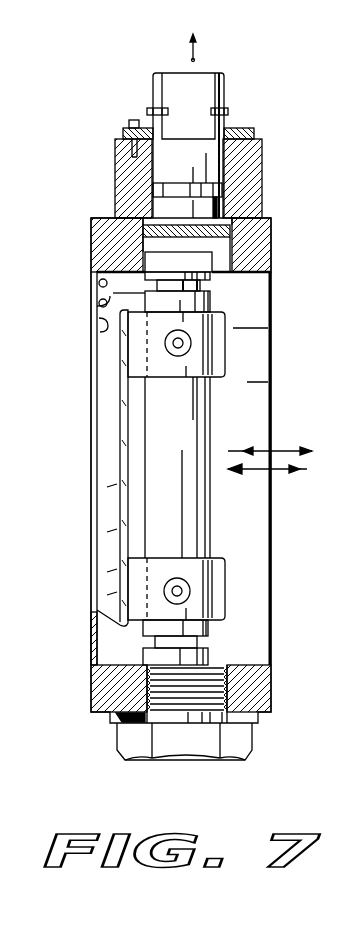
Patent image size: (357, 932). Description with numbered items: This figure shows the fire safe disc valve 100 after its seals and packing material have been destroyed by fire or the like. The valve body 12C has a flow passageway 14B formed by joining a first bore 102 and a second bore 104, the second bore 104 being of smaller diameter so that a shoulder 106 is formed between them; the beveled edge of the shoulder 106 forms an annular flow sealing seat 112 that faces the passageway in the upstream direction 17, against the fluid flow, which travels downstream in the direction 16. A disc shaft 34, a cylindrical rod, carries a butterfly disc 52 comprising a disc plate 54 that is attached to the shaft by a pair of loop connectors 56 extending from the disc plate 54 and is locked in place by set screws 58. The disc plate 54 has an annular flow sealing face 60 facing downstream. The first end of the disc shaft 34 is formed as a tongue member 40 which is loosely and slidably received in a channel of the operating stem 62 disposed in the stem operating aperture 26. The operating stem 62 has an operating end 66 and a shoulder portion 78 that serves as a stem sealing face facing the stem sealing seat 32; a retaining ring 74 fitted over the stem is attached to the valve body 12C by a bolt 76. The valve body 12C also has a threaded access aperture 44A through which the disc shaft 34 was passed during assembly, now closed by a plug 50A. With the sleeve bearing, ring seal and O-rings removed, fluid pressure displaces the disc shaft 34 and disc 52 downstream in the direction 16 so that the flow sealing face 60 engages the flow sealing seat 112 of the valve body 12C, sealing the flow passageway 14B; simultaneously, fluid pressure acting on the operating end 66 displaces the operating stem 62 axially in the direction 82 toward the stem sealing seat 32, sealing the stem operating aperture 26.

The fire safe disc valve 100 is at (182, 364).
The first bore 102 is at (258, 316).
The second bore 104 is at (86, 372).
The valve body 12C is at (278, 135).
The bolt 76 is at (133, 118).
The retaining ring 74 is at (237, 128).
The operating stem 62 is at (170, 75).
The shoulder portion 78 is at (229, 110).
The direction 82 is at (194, 58).
The stem operating aperture 26 is at (240, 195).
The operating end 66 is at (202, 75).
The stem sealing seat 32 is at (143, 222).
The tongue member 40 is at (182, 256).
The shoulder 106 is at (99, 282).
The annular flow sealing face 60 is at (99, 302).
The annular flow sealing seat 112 is at (103, 323).
The butterfly disc 52 is at (90, 453).
The disc plate 54 is at (103, 484).
The loop connectors 56 is at (216, 352).
The set screws 58 is at (177, 353).
The disc shaft 34 is at (185, 415).
The flow passageway 14B is at (249, 376).
The upstream direction 17 is at (248, 446).
The direction of fluid flow 16 is at (295, 470).
The threaded access aperture 44A is at (115, 721).
The plug 50A is at (232, 745).